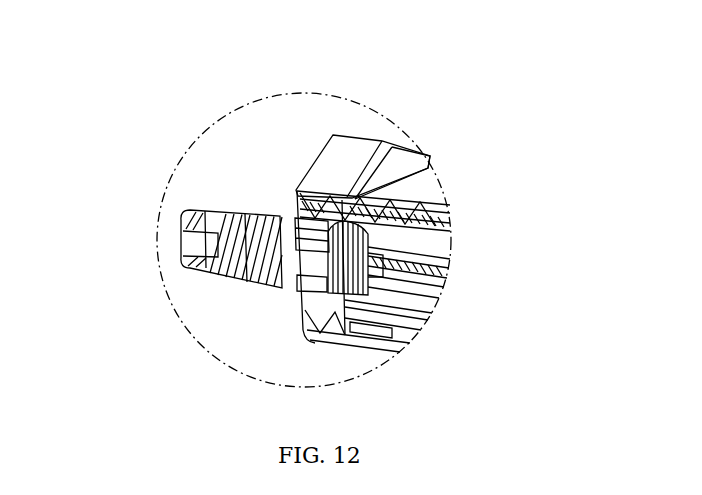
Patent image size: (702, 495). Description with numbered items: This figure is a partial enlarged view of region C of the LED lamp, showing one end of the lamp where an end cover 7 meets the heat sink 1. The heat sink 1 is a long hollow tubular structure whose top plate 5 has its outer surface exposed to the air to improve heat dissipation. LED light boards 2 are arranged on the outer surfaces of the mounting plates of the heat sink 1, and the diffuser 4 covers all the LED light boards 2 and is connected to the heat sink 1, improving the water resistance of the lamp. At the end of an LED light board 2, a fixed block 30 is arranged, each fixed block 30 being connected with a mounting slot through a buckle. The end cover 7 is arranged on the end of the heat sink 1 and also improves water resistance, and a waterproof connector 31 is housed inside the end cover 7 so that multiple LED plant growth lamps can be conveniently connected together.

The region C is at (157, 252).
The waterproof connector 31 is at (300, 240).
The end cover 7 is at (338, 158).
The diffuser 4 is at (393, 173).
The LED light board 2 is at (420, 210).
The heat sink 1 is at (420, 238).
The top plate 5 is at (442, 247).
The fixed block 30 is at (371, 177).